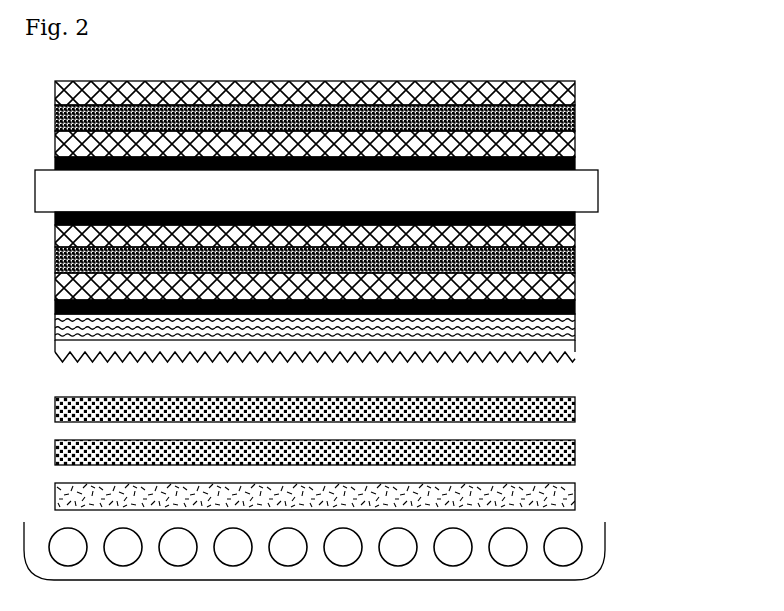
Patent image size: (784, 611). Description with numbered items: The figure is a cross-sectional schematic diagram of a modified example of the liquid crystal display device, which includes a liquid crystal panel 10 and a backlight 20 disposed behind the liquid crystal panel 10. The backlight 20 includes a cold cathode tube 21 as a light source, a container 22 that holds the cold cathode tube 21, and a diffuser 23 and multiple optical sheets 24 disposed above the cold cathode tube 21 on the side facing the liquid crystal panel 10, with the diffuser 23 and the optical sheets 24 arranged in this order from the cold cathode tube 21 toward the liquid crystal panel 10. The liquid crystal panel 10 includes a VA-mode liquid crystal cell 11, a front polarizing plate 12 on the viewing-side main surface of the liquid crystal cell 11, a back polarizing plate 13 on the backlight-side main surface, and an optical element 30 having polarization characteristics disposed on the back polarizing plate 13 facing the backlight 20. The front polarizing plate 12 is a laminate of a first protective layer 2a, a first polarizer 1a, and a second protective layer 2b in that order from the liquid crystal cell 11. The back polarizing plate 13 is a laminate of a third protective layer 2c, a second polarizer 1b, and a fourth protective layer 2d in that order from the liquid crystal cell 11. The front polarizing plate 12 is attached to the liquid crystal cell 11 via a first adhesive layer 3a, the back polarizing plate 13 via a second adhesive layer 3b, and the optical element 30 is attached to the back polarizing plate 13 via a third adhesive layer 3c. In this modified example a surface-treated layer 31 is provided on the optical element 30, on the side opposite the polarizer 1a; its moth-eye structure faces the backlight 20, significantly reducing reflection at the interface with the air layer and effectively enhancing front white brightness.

The liquid crystal panel 10 is at (403, 230).
The liquid crystal cell 11 is at (585, 192).
The front polarizing plate 12 is at (390, 111).
The back polarizing plate 13 is at (390, 273).
The first polarizer 1a is at (565, 118).
The second polarizer 1b is at (565, 267).
The first protective layer 2a is at (565, 141).
The second protective layer 2b is at (565, 93).
The third protective layer 2c is at (565, 242).
The fourth protective layer 2d is at (565, 290).
The first adhesive layer 3a is at (565, 163).
The second adhesive layer 3b is at (565, 220).
The third adhesive layer 3c is at (565, 308).
The optical element having polarization characteristics 30 is at (565, 332).
The surface-treated layer 31 is at (363, 368).
The backlight 20 is at (372, 500).
The cold cathode tube 21 is at (565, 550).
The container 22 is at (360, 545).
The diffuser 23 is at (562, 497).
The optical sheets 24 is at (606, 393).